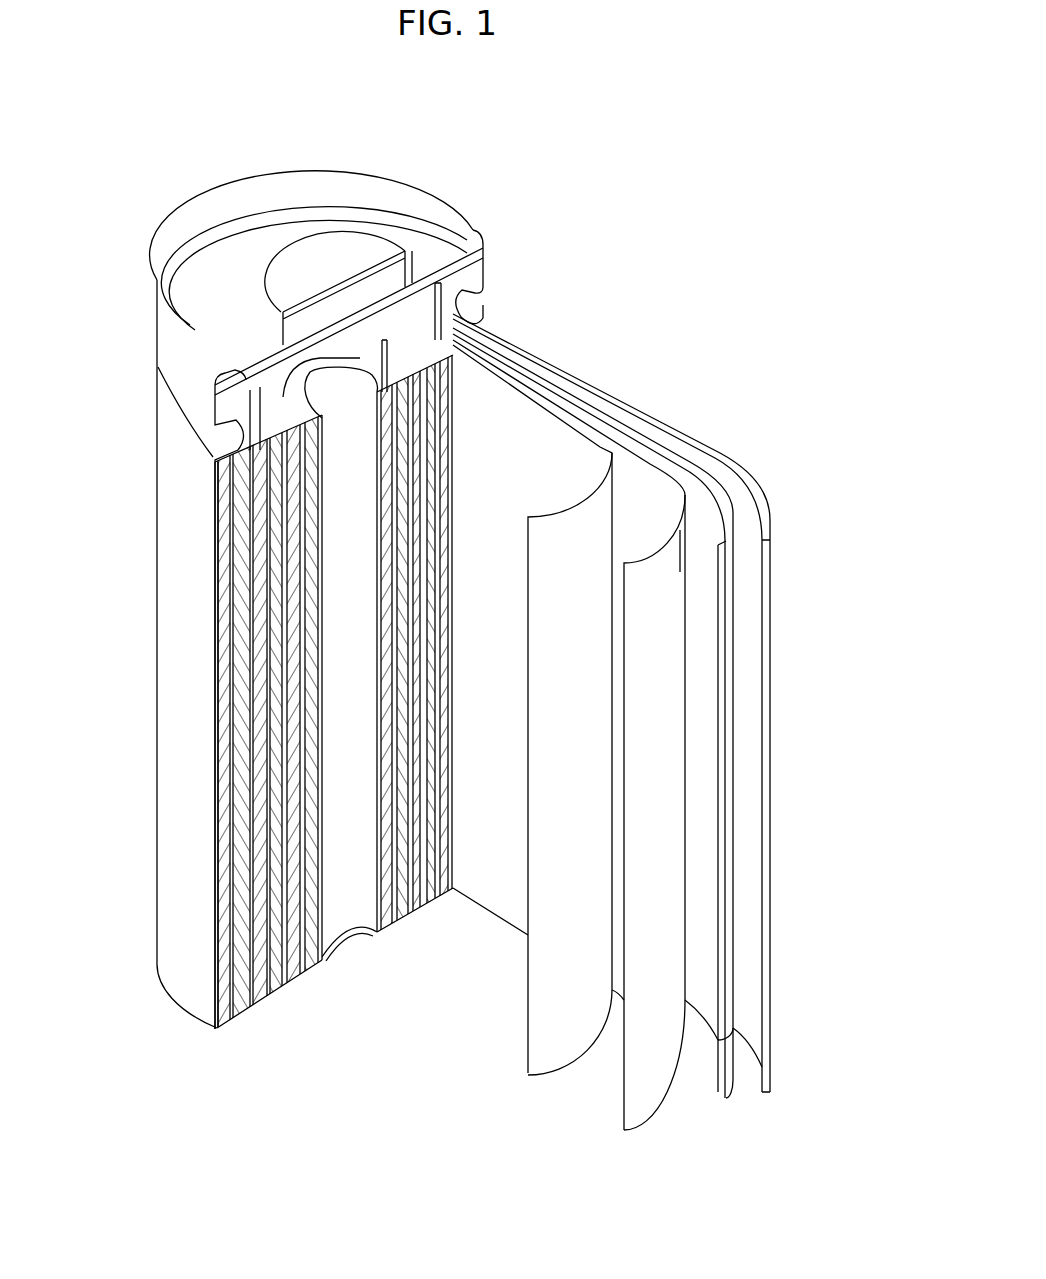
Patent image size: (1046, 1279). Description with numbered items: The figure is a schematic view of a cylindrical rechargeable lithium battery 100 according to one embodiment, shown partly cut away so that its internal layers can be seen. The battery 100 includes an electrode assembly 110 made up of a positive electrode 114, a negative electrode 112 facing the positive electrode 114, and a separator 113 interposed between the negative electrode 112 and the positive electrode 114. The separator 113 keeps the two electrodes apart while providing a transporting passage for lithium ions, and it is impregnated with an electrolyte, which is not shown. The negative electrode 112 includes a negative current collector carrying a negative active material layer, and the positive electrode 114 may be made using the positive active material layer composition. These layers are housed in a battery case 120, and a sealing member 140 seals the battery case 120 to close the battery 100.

The rechargeable lithium battery 100 is at (512, 165).
The electrode assembly 110 is at (371, 684).
The negative electrode 112 is at (765, 517).
The separator 113 is at (553, 400).
The positive electrode 114 is at (625, 443).
The battery case 120 is at (178, 565).
The sealing member 140 is at (287, 267).